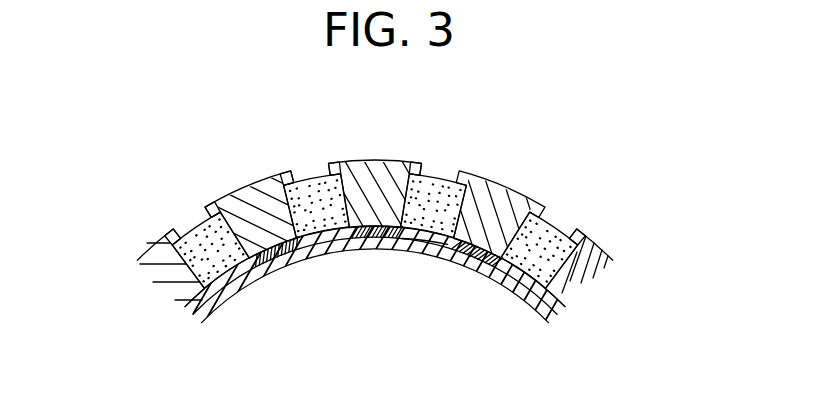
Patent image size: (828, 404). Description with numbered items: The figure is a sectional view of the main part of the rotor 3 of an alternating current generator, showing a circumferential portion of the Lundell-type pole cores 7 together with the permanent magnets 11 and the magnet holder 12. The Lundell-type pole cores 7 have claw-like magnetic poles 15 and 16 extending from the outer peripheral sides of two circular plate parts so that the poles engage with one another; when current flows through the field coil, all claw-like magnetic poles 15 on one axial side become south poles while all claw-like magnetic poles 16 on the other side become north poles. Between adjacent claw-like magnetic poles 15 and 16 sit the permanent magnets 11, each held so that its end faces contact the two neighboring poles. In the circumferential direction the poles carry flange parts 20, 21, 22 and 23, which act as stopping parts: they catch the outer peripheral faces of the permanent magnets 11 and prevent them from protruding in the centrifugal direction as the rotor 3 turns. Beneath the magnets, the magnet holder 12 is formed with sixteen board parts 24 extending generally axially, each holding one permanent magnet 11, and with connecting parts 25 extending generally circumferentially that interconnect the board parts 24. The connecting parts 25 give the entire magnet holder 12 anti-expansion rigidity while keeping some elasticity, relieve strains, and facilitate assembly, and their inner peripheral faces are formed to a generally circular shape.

The rotor 3 is at (193, 202).
The Lundell-type pole cores 7 is at (528, 189).
The permanent magnets 11 is at (195, 230).
The magnet holder 12 is at (503, 285).
The claw-like magnetic poles 15 is at (255, 207).
The claw-like magnetic poles 16 is at (380, 170).
The flange part 20 is at (208, 204).
The flange part 21 is at (284, 170).
The flange part 22 is at (337, 162).
The flange part 23 is at (418, 163).
The board parts 24 is at (422, 245).
The connecting parts 25 is at (372, 241).